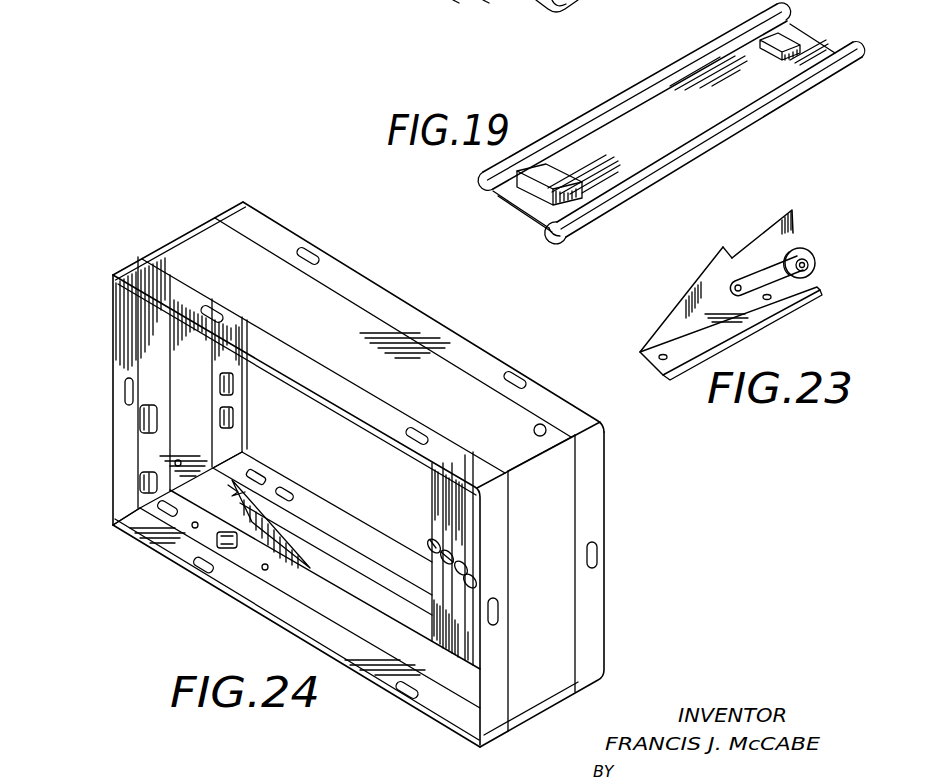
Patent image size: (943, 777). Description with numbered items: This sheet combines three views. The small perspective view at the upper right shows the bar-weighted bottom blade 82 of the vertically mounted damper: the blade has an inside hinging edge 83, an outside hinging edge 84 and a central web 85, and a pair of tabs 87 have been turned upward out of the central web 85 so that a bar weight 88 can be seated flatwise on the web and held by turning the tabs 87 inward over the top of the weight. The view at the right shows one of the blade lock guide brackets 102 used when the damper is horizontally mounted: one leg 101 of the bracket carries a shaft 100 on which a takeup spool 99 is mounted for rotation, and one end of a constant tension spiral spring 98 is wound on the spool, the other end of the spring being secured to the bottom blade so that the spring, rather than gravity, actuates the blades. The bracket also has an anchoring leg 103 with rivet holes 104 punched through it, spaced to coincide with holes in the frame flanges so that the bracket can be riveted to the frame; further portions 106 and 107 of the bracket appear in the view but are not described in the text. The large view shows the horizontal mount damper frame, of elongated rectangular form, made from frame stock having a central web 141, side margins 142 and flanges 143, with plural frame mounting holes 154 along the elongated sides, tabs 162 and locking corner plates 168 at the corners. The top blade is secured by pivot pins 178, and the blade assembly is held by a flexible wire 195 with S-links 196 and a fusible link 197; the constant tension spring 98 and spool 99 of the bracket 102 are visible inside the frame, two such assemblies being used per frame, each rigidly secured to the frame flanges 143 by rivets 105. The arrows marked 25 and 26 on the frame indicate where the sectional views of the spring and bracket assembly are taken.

In FIG. 19, the bottom blade 82 is at (832, 80).
In FIG. 19, the inside hinging edge 83 is at (565, 131).
In FIG. 19, the outside hinging edge 84 is at (700, 150).
In FIG. 19, the central web 85 is at (802, 42).
In FIG. 19, the tabs 87 is at (540, 184).
In FIG. 19, the bar weight 88 is at (632, 110).
In FIG. 23, the constant tension spiral spring 98 is at (761, 268).
In FIG. 24, the constant tension spiral spring 98 is at (373, 578).
In FIG. 23, the takeup spool 99 is at (812, 251).
In FIG. 23, the shaft 100 is at (812, 266).
In FIG. 24, the shaft 100 is at (185, 451).
In FIG. 23, the leg 101 is at (790, 216).
In FIG. 23, the blade lock guide bracket 102 is at (808, 290).
In FIG. 23, the anchoring leg 103 is at (788, 297).
In FIG. 23, the rivet holes 104 is at (765, 300).
In FIG. 24, the rivets 105 is at (262, 569).
In FIG. 23, the gusset 106 is at (687, 298).
In FIG. 24, the gusset 106 is at (265, 531).
In FIG. 23, the notch 107 is at (743, 243).
In FIG. 24, the notch 107 is at (237, 491).
In FIG. 24, the central web 141 is at (193, 250).
In FIG. 24, the side margins 142 is at (413, 315).
In FIG. 24, the flanges 143 is at (313, 594).
In FIG. 24, the frame mounting holes 154 is at (317, 243).
In FIG. 24, the tabs 162 is at (159, 449).
In FIG. 24, the locking corner plates 168 is at (148, 508).
In FIG. 24, the pivot pins 178 is at (535, 428).
In FIG. 24, the flexible wire 195 is at (464, 577).
In FIG. 24, the S-links 196 is at (432, 563).
In FIG. 24, the fusible link 197 is at (432, 542).
In FIG. 24, the section line 25 is at (83, 374).
In FIG. 24, the section line 26 is at (100, 417).